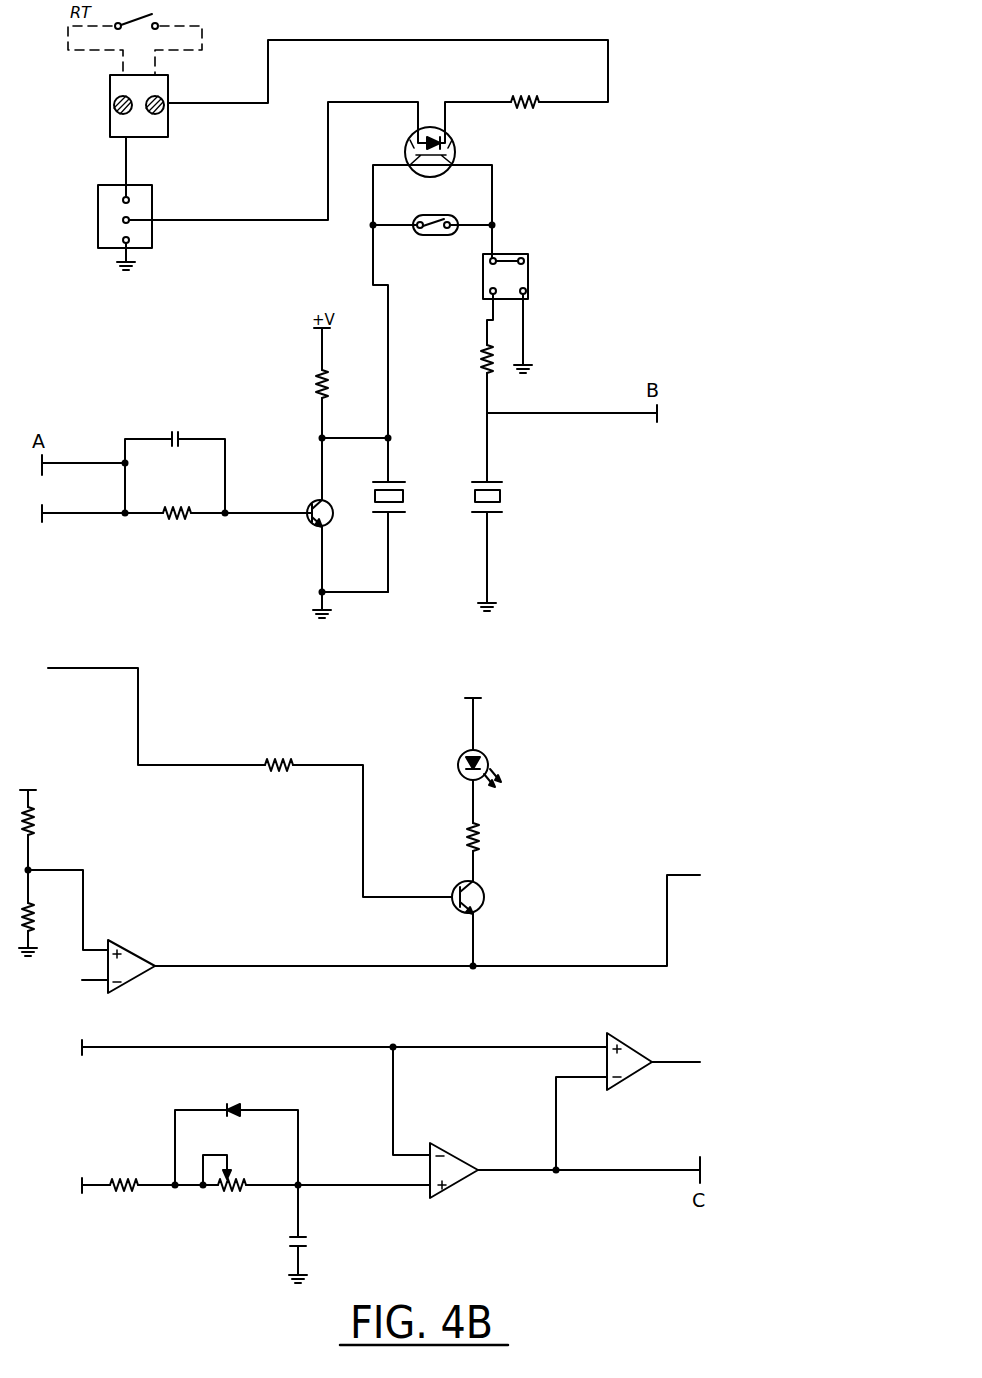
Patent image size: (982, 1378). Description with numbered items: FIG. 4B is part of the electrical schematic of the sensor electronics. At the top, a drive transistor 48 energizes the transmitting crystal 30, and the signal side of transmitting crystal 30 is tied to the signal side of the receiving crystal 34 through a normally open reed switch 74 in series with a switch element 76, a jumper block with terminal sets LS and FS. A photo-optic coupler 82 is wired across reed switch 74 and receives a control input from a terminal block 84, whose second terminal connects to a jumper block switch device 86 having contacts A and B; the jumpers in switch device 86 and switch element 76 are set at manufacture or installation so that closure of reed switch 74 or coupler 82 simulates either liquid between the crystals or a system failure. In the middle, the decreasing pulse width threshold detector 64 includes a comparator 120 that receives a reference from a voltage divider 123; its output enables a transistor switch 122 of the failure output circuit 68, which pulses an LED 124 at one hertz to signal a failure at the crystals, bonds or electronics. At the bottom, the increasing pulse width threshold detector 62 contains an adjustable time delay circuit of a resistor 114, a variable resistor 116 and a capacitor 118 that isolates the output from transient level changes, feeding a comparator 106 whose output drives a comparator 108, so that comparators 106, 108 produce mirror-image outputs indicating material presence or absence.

The terminal block 84 is at (170, 85).
The jumper block switch device 86 is at (152, 187).
The photo-optic coupler 82 is at (455, 148).
The reed switch 74 is at (445, 236).
The switch element 76 is at (528, 298).
The transmitting crystal 30 is at (406, 492).
The receiving crystal 34 is at (503, 490).
The drive transistor 48 is at (311, 528).
The voltage divider 123 is at (36, 817).
The decreasing pulse width threshold detector 64 is at (114, 882).
The comparator 120 is at (131, 950).
The LED 124 is at (486, 756).
The output circuit 68 is at (489, 811).
The transistor switch 122 is at (461, 911).
The resistor 114 is at (118, 1180).
The variable resistor 116 is at (229, 1195).
The increasing pulse width threshold detector 62 is at (251, 1197).
The capacitor 118 is at (340, 1230).
The comparator 106 is at (467, 1162).
The comparator 108 is at (630, 1045).